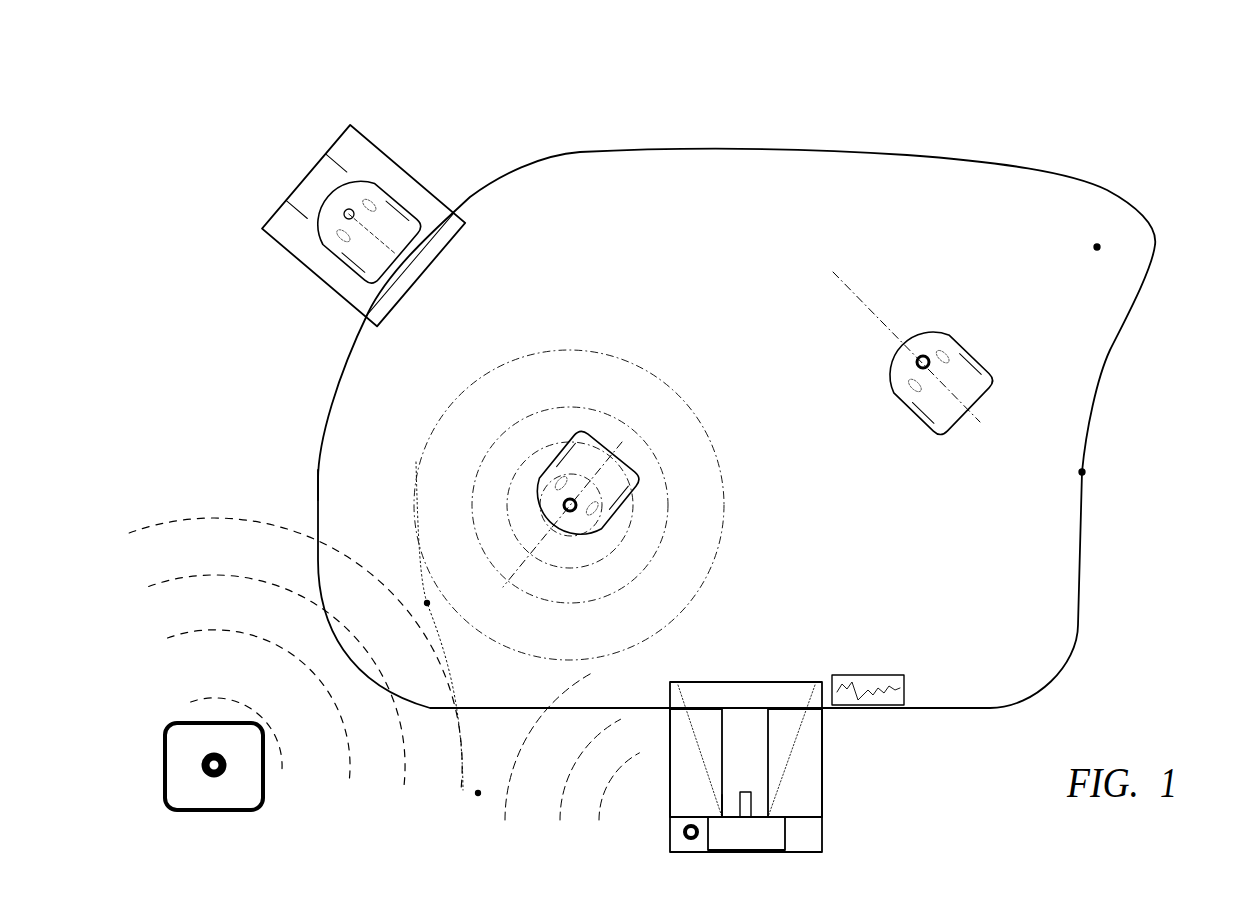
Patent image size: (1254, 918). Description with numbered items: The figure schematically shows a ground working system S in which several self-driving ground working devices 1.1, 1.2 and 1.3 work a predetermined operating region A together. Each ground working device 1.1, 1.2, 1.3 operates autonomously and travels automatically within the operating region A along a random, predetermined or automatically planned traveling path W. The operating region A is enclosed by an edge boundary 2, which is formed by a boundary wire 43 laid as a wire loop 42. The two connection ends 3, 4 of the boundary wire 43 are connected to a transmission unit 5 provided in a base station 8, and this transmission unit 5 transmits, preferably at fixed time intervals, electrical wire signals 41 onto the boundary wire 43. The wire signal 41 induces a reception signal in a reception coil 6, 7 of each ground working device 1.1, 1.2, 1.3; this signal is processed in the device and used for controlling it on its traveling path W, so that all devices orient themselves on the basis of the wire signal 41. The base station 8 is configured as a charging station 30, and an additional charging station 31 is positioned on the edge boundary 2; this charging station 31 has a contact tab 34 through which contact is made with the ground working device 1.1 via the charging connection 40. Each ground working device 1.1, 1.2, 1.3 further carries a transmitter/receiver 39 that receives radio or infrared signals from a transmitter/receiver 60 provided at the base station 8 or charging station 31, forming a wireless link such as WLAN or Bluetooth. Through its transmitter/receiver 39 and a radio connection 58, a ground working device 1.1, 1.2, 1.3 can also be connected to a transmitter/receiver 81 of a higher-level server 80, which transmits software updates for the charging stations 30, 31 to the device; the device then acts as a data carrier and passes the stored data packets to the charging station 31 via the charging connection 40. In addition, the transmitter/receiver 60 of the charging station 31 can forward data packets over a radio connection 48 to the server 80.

The edge boundary 2 is at (322, 379).
The ground working system S is at (775, 200).
The operating region A is at (1097, 247).
The wire loop 42 is at (316, 481).
The boundary wire 43 is at (1084, 471).
The charging station 31 is at (355, 158).
The ground working device 1.1 is at (408, 238).
The charging connection 40 is at (349, 214).
The ground working device 1.3 is at (972, 382).
The ground working device 1.2 is at (588, 450).
The traveling path W is at (741, 443).
The reception coil 6 is at (922, 352).
The reception coil 7 is at (910, 362).
The transmitter/receiver 39 is at (919, 370).
The radio connection 58 is at (425, 600).
The radio connection 48 is at (479, 796).
The server 80 is at (247, 800).
The transmitter/receiver 81 is at (206, 768).
The base station 8 is at (742, 697).
The charging station 30 is at (752, 745).
The transmission unit 5 is at (790, 835).
The contact tab 34 is at (748, 802).
The connection end 4 is at (773, 815).
The connection end 3 is at (720, 816).
The transmitter/receiver 60 is at (686, 836).
The wire signal 41 is at (902, 677).